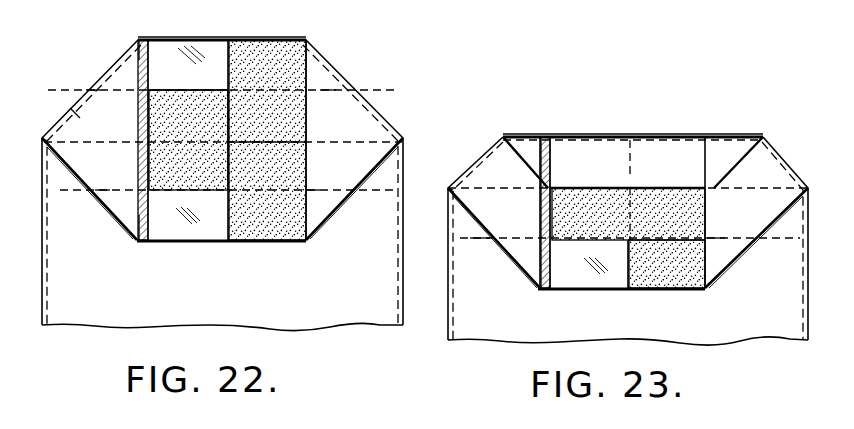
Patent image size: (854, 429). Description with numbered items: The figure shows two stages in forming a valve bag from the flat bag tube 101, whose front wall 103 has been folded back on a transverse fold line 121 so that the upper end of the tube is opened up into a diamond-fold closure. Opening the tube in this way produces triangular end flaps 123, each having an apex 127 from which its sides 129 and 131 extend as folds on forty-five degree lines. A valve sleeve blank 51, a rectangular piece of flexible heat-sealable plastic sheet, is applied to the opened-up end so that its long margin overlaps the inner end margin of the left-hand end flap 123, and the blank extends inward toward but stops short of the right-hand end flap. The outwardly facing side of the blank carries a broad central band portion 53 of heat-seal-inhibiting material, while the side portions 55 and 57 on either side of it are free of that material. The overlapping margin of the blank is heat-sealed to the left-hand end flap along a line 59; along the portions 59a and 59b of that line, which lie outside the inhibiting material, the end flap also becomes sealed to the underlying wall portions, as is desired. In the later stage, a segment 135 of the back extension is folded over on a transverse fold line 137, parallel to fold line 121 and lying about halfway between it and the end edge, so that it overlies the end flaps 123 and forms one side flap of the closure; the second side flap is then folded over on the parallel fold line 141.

In FIG. 22, the valve sleeve blank 51 is at (236, 56).
In FIG. 23, the valve sleeve blank 51 is at (634, 272).
In FIG. 22, the central band portion 53 is at (196, 108).
In FIG. 23, the central band portion 53 is at (627, 214).
In FIG. 22, the side portion 55 is at (188, 46).
In FIG. 22, the side portion 57 is at (203, 240).
In FIG. 23, the side portion 57 is at (578, 276).
In FIG. 22, the heat-seal line 59 is at (140, 158).
In FIG. 23, the heat-seal line 59 is at (545, 212).
In FIG. 22, the portion of heat-seal line 59a is at (137, 215).
In FIG. 22, the portion of heat-seal line 59b is at (139, 58).
In FIG. 22, the bag tube 101 is at (90, 323).
In FIG. 23, the bag tube 101 is at (484, 341).
In FIG. 22, the front wall 103 is at (272, 305).
In FIG. 23, the front wall 103 is at (540, 326).
In FIG. 22, the fold line 121 is at (292, 150).
In FIG. 22, the triangular end flap 123 is at (80, 114).
In FIG. 23, the triangular end flap 123 is at (492, 230).
In FIG. 22, the apex 127 is at (223, 123).
In FIG. 23, the apex 127 is at (448, 190).
In FIG. 22, the side of end flap 129 is at (104, 200).
In FIG. 22, the side of end flap 131 is at (98, 94).
In FIG. 23, the segment of back extension 135 is at (640, 152).
In FIG. 22, the transverse fold line 137 is at (332, 90).
In FIG. 23, the transverse fold line 137 is at (665, 138).
In FIG. 22, the transverse fold line 141 is at (320, 192).
In FIG. 23, the transverse fold line 141 is at (730, 240).